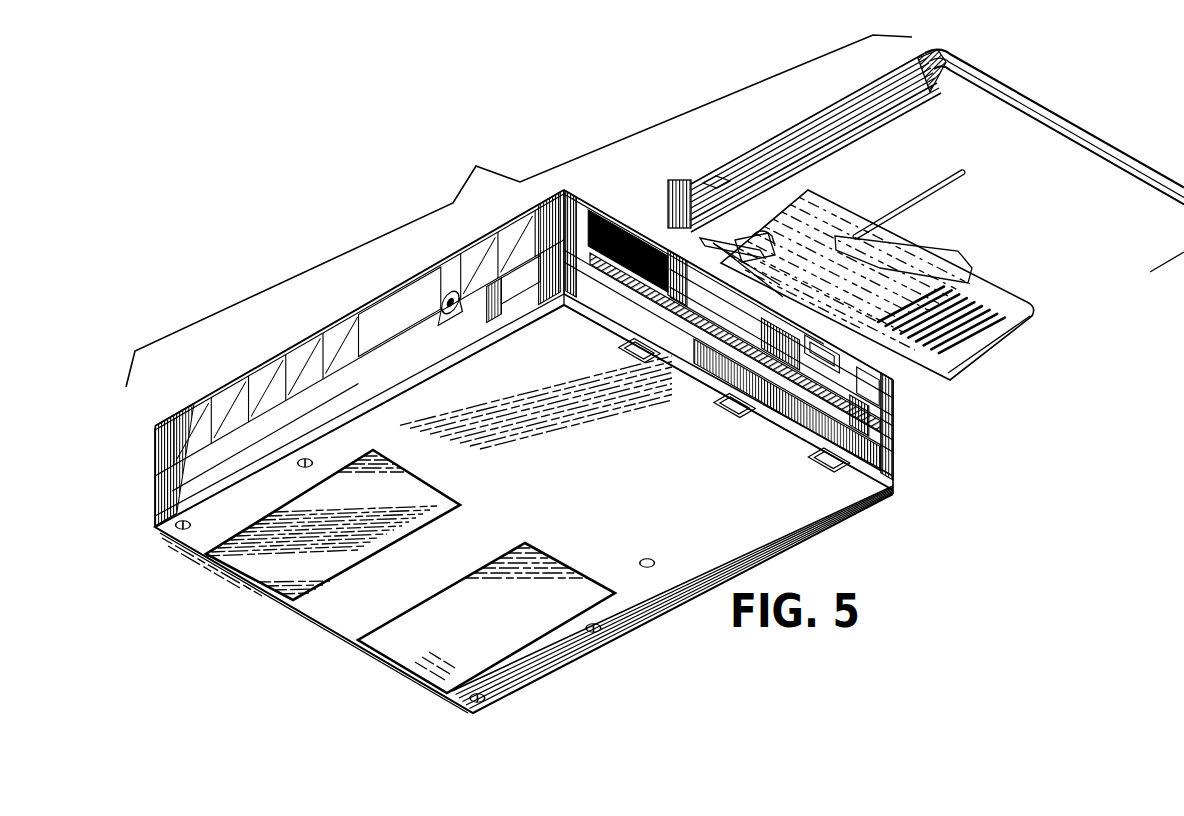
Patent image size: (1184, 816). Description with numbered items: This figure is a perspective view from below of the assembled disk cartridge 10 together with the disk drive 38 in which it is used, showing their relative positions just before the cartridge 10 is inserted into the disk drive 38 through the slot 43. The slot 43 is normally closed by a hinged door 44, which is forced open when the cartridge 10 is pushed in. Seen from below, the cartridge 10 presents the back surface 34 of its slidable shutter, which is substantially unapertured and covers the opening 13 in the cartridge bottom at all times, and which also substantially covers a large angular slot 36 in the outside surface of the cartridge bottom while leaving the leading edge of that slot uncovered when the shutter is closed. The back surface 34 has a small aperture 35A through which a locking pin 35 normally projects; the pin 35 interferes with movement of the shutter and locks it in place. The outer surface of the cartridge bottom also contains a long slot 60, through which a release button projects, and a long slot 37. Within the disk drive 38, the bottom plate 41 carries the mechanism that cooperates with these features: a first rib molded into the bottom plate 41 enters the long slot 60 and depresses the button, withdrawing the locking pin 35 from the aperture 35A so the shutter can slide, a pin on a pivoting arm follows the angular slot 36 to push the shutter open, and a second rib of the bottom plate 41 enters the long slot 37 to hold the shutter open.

The disk cartridge 10 is at (1065, 128).
The opening in cartridge bottom 13 is at (893, 253).
The back surface of shutter 34 is at (920, 262).
The locking pin 35 is at (747, 240).
The aperture in shutter back surface 35A is at (757, 240).
The angular slot 36 is at (717, 237).
The long slot 37 is at (900, 208).
The disk drive 38 is at (472, 257).
The bottom plate 41 is at (780, 518).
The opening 43 is at (893, 413).
The hinged door 44 is at (893, 424).
The long slot 60 is at (884, 100).